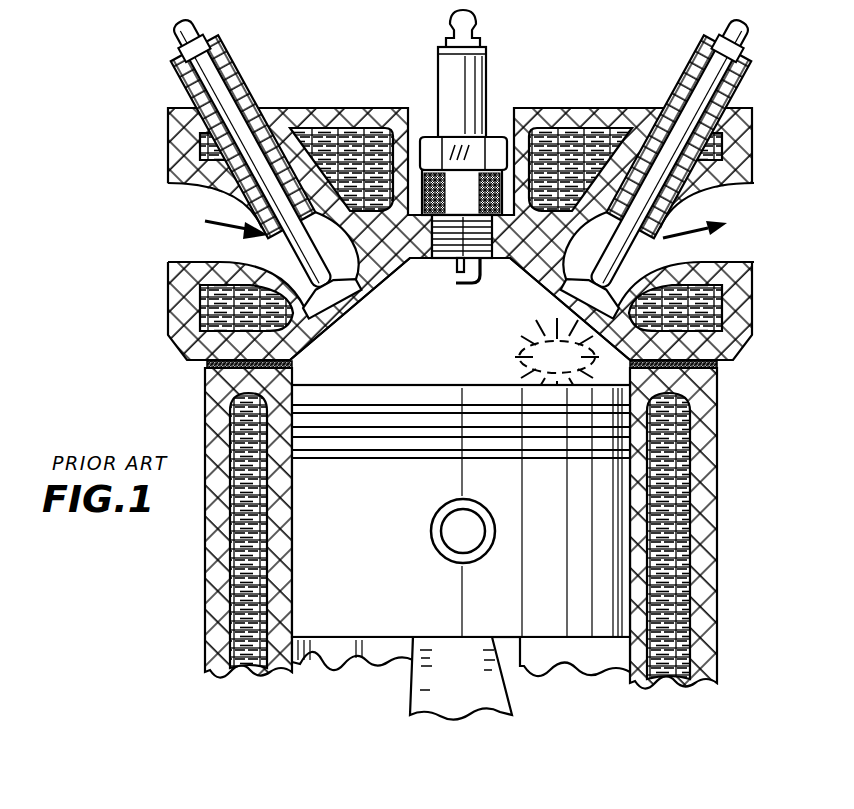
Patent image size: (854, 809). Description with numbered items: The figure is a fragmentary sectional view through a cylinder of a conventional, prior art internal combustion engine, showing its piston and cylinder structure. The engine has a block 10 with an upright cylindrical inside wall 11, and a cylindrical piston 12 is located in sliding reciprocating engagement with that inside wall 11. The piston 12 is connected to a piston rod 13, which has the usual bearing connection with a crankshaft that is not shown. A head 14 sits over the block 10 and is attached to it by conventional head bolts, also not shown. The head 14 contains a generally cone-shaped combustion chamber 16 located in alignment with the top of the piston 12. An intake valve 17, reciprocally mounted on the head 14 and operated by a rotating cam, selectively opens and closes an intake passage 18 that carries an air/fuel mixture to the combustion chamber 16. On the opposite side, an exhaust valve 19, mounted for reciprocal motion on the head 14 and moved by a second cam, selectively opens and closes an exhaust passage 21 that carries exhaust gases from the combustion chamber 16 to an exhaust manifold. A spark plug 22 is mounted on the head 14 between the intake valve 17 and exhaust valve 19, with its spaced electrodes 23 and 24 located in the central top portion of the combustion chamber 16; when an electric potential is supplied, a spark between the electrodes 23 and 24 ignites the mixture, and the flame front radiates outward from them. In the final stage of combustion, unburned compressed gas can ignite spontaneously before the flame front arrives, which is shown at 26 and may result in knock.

The block 10 is at (710, 522).
The inside wall 11 is at (334, 656).
The piston 12 is at (540, 615).
The piston rod 13 is at (412, 681).
The head 14 is at (168, 150).
The combustion chamber 16 is at (396, 358).
The intake valve 17 is at (347, 288).
The intake passage 18 is at (188, 212).
The exhaust valve 19 is at (583, 293).
The exhaust passage 21 is at (740, 245).
The spark plug 22 is at (478, 72).
The electrode 23 is at (455, 268).
The electrode 24 is at (466, 286).
The spontaneous ignition of unburned compressed gas 26 is at (575, 370).